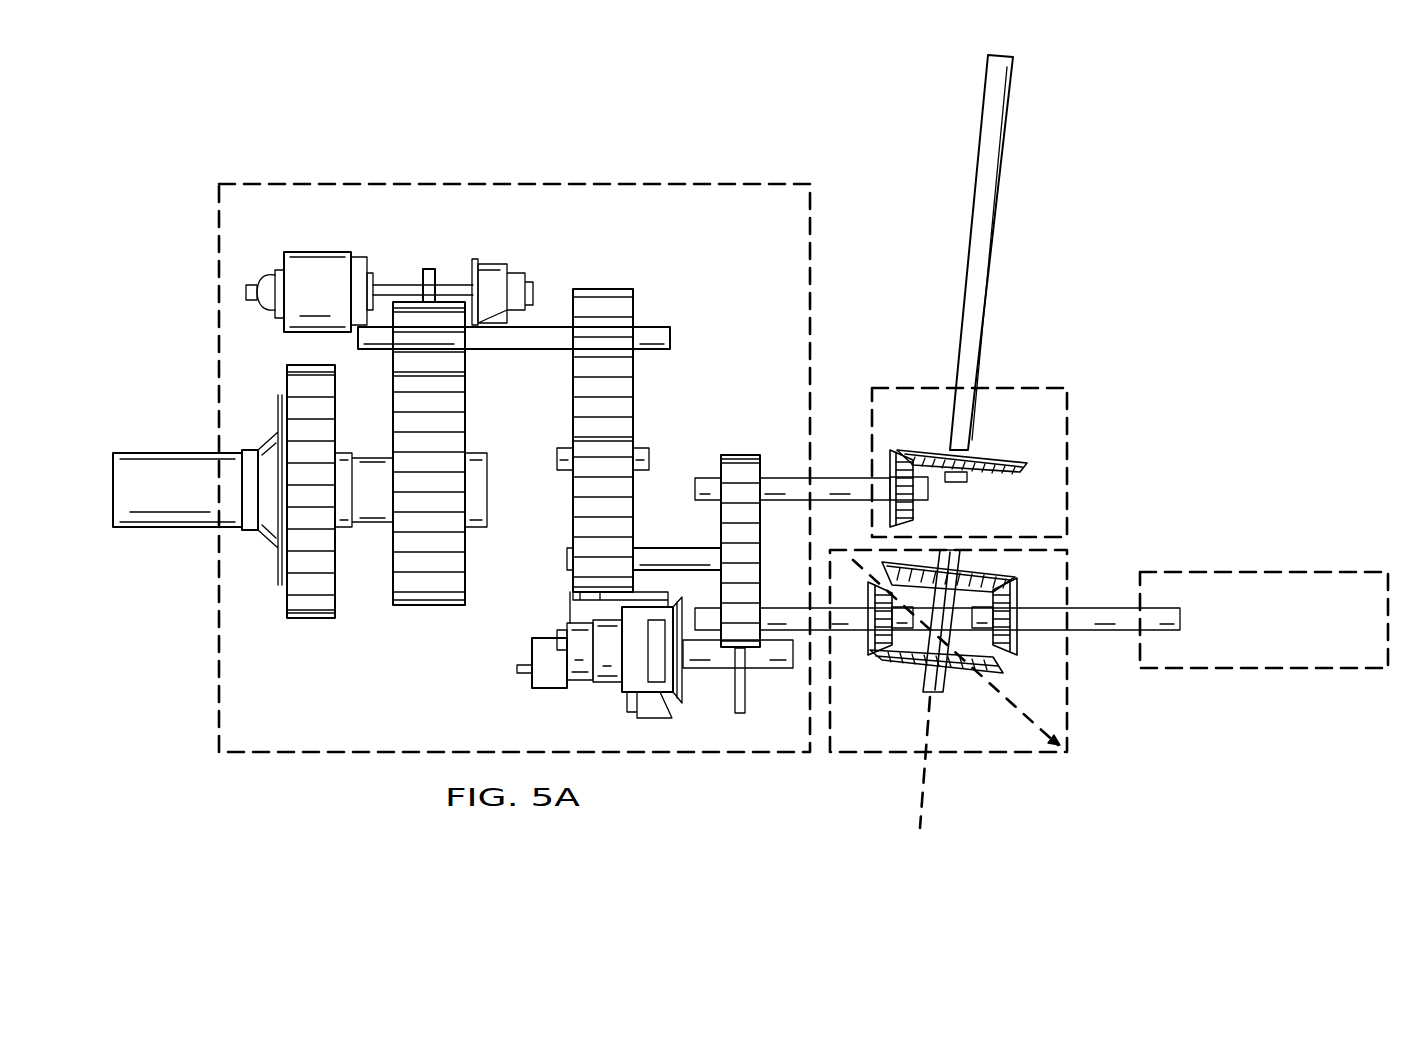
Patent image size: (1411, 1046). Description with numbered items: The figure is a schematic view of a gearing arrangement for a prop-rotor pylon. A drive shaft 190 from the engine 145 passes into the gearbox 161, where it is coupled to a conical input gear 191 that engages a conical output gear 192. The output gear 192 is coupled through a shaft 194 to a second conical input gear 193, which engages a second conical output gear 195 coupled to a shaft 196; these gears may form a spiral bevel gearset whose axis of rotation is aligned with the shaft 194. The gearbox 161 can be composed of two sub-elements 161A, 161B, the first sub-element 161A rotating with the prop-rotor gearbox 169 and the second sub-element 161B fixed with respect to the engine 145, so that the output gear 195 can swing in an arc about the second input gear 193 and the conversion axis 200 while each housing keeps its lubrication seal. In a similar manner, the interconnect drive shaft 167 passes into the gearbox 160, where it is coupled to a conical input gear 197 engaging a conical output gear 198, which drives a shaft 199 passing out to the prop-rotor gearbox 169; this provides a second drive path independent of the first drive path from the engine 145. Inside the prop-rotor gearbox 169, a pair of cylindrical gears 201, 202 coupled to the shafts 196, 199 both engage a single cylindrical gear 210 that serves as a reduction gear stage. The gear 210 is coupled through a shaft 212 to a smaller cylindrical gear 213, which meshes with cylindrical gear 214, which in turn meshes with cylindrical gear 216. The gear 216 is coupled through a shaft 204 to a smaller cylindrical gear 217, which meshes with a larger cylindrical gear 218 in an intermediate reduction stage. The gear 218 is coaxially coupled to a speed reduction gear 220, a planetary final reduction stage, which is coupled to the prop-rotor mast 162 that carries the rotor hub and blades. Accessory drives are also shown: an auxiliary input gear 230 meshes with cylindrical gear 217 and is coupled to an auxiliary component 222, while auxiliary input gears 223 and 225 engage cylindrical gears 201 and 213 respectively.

The engine 145 is at (1270, 669).
The gearbox 160 is at (1068, 450).
The gearbox 161 is at (1013, 752).
The first sub-element 161A is at (858, 753).
The second sub-element 161B is at (1068, 560).
The prop-rotor mast 162 is at (165, 528).
The interconnect drive shaft 167 is at (1000, 215).
The prop-rotor gearbox 169 is at (472, 184).
The drive shaft 190 is at (1098, 631).
The conical input gear 191 is at (1030, 640).
The conical output gear 192 is at (975, 566).
The second conical input gear 193 is at (968, 674).
The shaft 194 is at (905, 660).
The second conical output gear 195 is at (868, 640).
The shaft 196 is at (858, 600).
The conical input gear 197 is at (1003, 452).
The conical output gear 198 is at (893, 455).
The shaft 199 is at (830, 478).
The conversion axis 200 is at (934, 800).
The cylindrical gear 201 is at (748, 650).
The cylindrical gear 202 is at (737, 455).
The shaft 204 is at (548, 352).
The cylindrical gear 210 is at (762, 523).
The shaft 212 is at (667, 548).
The cylindrical gear 213 is at (567, 562).
The cylindrical gear 214 is at (573, 488).
The cylindrical gear 216 is at (603, 289).
The cylindrical gear 217 is at (467, 360).
The cylindrical gear 218 is at (428, 606).
The speed reduction gear 220 is at (310, 619).
The auxiliary component 222 is at (318, 252).
The auxiliary input gear 223 is at (710, 705).
The auxiliary input gear 225 is at (532, 660).
The auxiliary input gear 230 is at (428, 269).